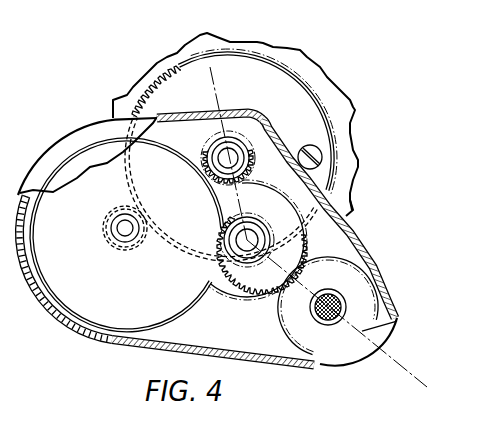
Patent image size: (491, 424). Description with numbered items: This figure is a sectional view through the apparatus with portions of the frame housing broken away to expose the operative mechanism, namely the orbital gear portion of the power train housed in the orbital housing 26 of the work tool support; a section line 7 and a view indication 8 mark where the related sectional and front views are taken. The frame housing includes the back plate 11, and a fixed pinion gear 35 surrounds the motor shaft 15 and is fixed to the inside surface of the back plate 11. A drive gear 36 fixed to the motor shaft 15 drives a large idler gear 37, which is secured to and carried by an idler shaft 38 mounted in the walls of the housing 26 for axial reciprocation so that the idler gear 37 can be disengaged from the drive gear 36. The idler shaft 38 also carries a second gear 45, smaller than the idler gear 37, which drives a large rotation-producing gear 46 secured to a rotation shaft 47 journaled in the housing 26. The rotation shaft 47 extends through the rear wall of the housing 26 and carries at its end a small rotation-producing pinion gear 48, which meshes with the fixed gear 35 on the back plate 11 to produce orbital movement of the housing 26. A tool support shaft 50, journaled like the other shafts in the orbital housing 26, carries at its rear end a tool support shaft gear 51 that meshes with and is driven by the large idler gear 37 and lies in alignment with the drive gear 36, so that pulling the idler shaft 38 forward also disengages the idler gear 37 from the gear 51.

The section line 7— 7 is at (242, 85).
The view line 8 is at (422, 348).
The back plate 11 is at (343, 103).
The motor shaft 15 is at (221, 158).
The orbital housing 26 is at (353, 206).
The fixed pinion gear 35 is at (274, 99).
The drive gear 36 is at (255, 152).
The large idler gear 37 is at (303, 242).
The idler shaft 38 is at (243, 242).
The second gear 45 is at (238, 262).
The rotation-producing gear 46 is at (186, 305).
The rotation shaft 47 is at (127, 233).
The small rotation-producing pinion gear 48 is at (104, 250).
The tool support shaft 50 is at (318, 318).
The tool support shaft gear 51 is at (375, 266).